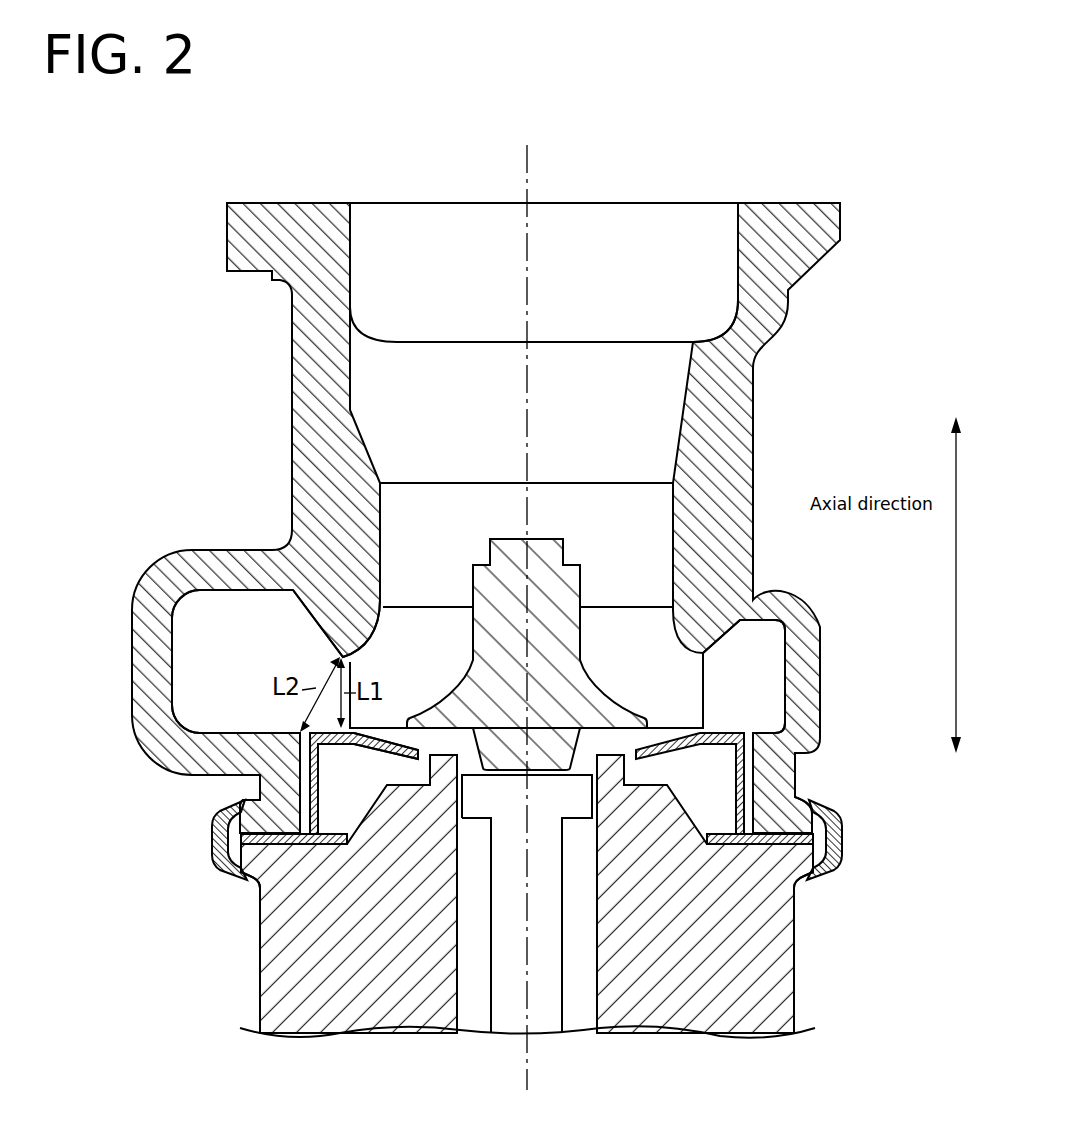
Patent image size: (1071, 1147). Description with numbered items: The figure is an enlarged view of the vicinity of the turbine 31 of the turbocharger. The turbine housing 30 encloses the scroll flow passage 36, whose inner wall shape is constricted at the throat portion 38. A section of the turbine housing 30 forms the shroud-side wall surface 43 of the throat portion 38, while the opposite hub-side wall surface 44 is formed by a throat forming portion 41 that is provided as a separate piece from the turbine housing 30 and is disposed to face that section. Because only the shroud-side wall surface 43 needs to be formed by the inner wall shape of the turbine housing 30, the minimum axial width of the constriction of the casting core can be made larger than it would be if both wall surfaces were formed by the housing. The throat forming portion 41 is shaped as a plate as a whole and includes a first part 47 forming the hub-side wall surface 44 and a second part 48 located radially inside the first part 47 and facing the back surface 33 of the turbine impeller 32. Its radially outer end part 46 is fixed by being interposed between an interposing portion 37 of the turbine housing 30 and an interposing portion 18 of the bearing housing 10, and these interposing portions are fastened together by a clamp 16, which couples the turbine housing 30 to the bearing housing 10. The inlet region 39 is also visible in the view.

The bearing housing 10 is at (780, 995).
The clamp 16 is at (213, 833).
The interposing portion of the bearing housing 18 is at (240, 877).
The turbine housing 30 is at (790, 305).
The turbine 31 is at (788, 146).
The turbine impeller 32 is at (605, 607).
The back surface 33 is at (440, 727).
The scroll flow passage 36 is at (775, 672).
The interposing portion of the turbine housing 37 is at (247, 800).
The throat portion 38 is at (317, 693).
The inlet 39 is at (445, 250).
The throat forming portion 41 is at (320, 785).
The shroud-side wall surface 43 is at (338, 650).
The hub-side wall surface 44 is at (302, 730).
The end part 46 is at (292, 845).
The first part 47 is at (179, 757).
The second part 48 is at (405, 735).